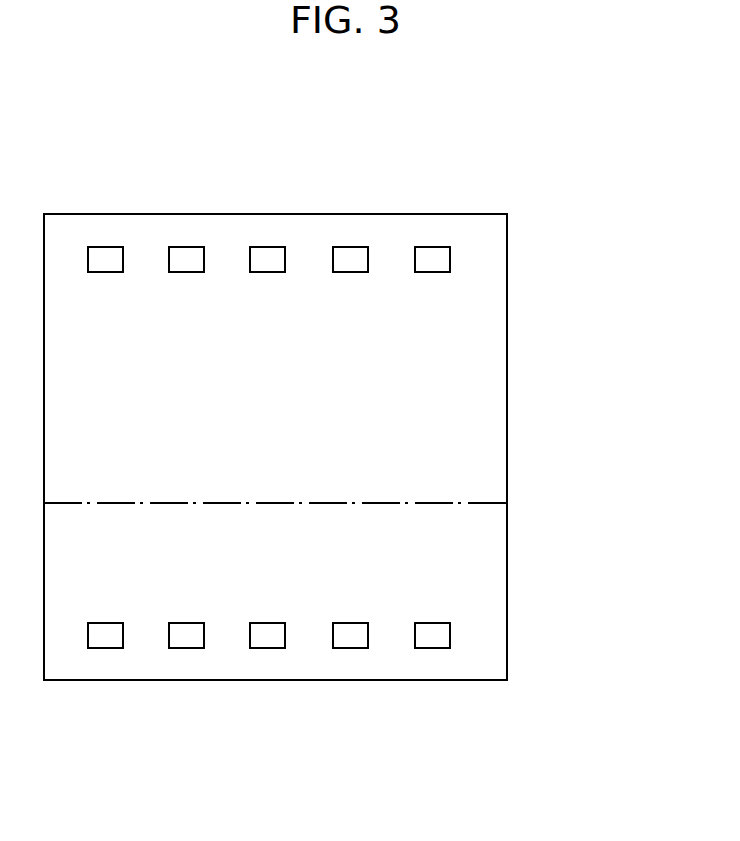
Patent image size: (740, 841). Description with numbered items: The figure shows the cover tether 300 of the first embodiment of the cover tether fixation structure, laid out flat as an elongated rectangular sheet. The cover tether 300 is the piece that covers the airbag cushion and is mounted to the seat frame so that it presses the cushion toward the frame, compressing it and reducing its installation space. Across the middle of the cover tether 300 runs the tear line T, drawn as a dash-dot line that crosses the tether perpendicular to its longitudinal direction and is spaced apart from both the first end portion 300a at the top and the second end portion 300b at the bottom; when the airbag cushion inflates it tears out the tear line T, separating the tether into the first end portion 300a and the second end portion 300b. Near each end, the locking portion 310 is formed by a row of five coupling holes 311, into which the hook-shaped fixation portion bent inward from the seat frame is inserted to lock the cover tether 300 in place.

The cover tether 300 is at (347, 447).
The first end portion 300a is at (492, 263).
The second end portion 300b is at (493, 637).
The locking portion 310 is at (269, 449).
The coupling hole 311 is at (428, 257).
The tear line T is at (428, 503).